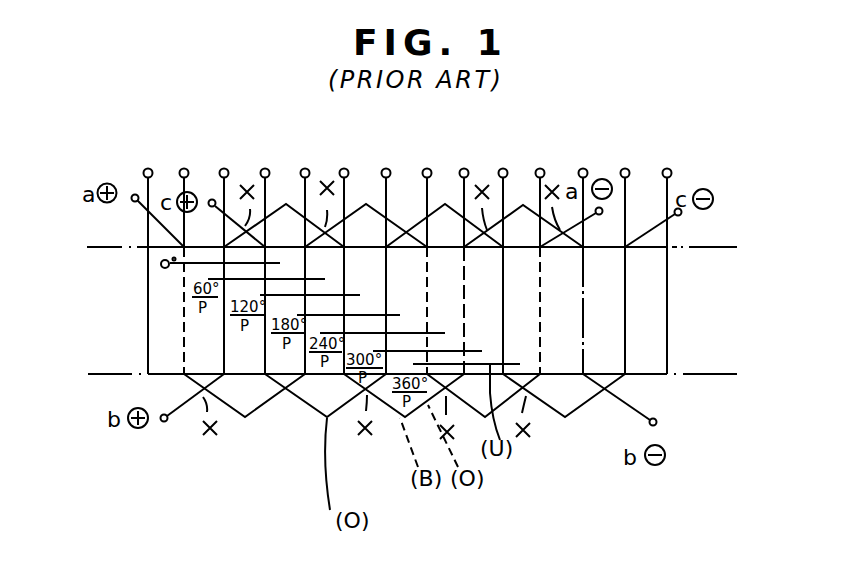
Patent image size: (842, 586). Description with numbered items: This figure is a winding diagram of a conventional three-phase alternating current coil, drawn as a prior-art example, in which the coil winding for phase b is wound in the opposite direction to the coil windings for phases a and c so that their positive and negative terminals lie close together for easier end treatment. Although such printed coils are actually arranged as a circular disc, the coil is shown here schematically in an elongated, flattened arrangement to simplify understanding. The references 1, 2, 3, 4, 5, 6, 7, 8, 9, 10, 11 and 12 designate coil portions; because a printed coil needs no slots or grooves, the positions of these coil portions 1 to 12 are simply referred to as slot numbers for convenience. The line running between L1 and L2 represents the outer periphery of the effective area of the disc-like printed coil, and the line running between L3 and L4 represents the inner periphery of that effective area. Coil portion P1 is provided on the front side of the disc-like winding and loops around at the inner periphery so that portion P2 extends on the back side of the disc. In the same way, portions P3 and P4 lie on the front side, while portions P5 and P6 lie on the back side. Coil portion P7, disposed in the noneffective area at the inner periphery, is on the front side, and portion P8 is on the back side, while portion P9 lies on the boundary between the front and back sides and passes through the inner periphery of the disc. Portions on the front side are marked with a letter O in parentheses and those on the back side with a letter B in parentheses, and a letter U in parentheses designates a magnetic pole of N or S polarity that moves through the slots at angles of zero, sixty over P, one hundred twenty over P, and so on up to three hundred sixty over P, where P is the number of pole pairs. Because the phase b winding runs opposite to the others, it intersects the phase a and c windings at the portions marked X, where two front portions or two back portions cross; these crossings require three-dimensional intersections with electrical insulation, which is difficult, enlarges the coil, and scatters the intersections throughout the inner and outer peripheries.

The coil portion 1 is at (151, 254).
The coil portion 2 is at (184, 254).
The coil portion 3 is at (224, 254).
The coil portion 4 is at (265, 254).
The coil portion 5 is at (305, 254).
The coil portion 6 is at (344, 254).
The coil portion 7 is at (386, 254).
The coil portion 8 is at (427, 254).
The coil portion 9 is at (464, 254).
The coil portion 10 is at (505, 254).
The coil portion 11 is at (544, 254).
The coil portion 12 is at (585, 254).
The outer periphery line end L1 is at (392, 249).
The outer periphery line end L2 is at (733, 256).
The inner periphery line end L3 is at (392, 375).
The inner periphery line end L4 is at (734, 375).
The coil portion P1 is at (184, 374).
The coil portion P2 is at (304, 376).
The coil portion P3 is at (186, 388).
The coil portion P4 is at (266, 350).
The coil portion P5 is at (343, 358).
The coil portion P6 is at (386, 295).
The coil portion P7 is at (232, 392).
The coil portion P8 is at (270, 405).
The coil portion P9 is at (252, 418).